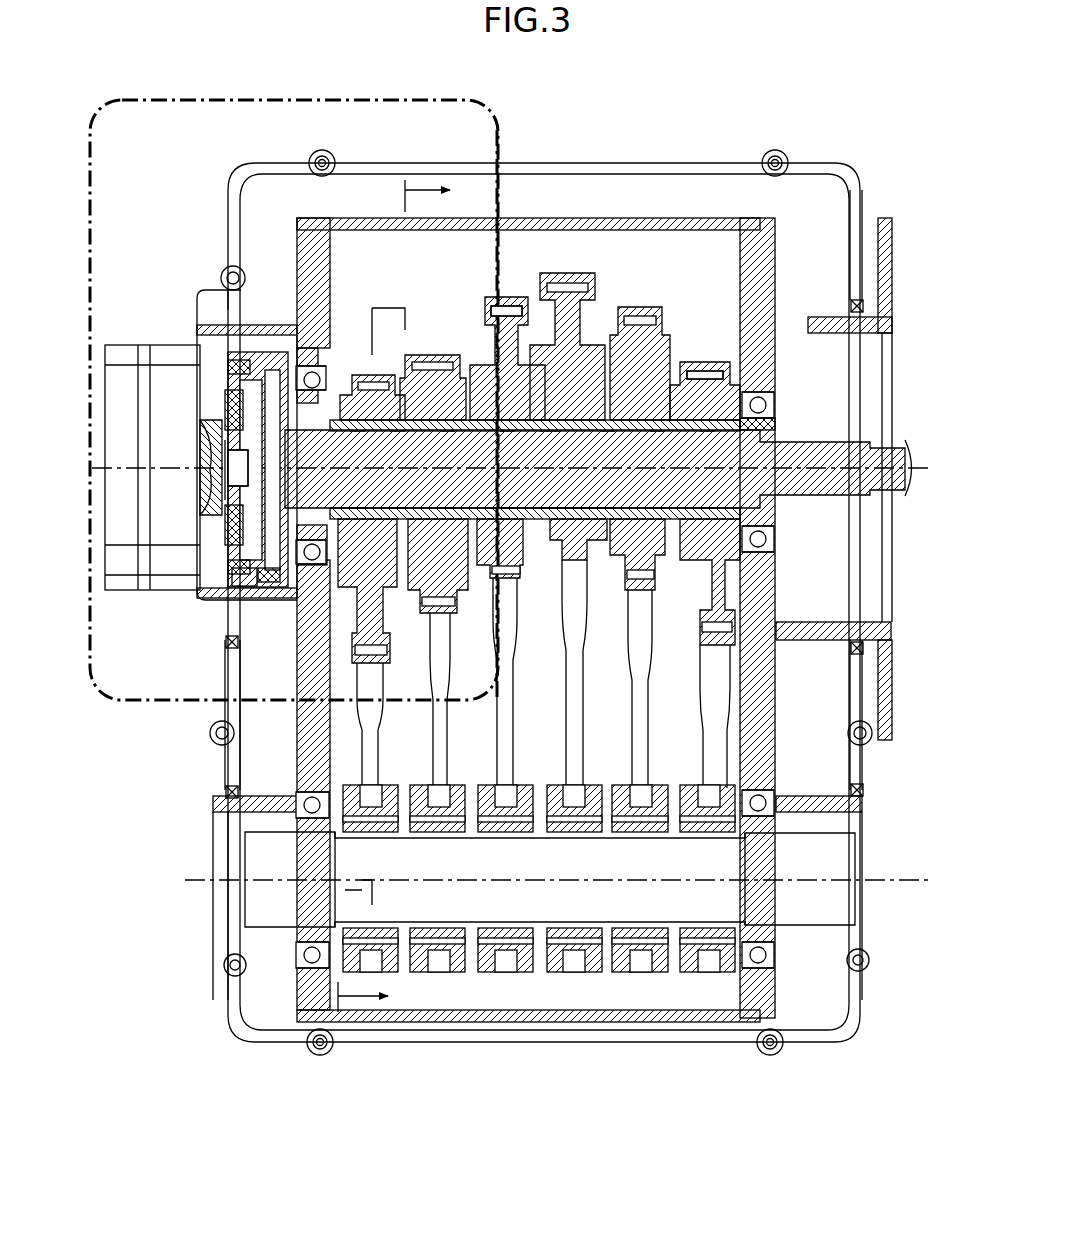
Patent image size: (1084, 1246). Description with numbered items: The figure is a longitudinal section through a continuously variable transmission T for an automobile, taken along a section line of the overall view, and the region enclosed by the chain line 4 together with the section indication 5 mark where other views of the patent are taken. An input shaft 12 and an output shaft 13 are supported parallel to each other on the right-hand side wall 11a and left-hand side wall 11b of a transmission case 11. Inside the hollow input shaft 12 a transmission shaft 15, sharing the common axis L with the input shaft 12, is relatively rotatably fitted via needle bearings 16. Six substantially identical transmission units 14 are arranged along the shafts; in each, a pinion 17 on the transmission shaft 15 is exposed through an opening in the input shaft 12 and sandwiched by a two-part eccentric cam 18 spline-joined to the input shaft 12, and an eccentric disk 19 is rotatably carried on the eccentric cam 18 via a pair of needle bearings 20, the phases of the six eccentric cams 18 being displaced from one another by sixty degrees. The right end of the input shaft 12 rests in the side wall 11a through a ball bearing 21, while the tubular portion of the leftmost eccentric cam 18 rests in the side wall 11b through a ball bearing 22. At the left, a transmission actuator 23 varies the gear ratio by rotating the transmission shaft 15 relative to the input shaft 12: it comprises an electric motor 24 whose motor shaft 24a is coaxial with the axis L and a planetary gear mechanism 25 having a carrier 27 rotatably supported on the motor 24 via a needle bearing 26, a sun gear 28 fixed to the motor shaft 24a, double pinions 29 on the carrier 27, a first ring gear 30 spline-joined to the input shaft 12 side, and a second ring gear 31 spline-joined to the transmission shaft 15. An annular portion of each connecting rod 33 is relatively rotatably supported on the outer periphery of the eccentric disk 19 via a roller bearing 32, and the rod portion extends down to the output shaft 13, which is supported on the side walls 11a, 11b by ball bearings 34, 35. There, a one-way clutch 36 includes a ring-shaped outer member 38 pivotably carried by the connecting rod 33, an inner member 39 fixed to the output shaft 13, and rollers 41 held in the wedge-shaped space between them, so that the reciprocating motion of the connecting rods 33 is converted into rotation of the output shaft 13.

The region shown in FIG. 4 is at (503, 118).
The continuously variable transmission T is at (728, 152).
The transmission case 11 is at (540, 565).
The right-hand side wall 11a is at (758, 222).
The left-hand side wall 11b is at (318, 238).
The input shaft 12 is at (852, 496).
The output shaft 13 is at (280, 856).
The transmission unit 14 is at (488, 300).
The transmission shaft 15 is at (776, 420).
The needle bearing 16 is at (392, 468).
The pinion 17 is at (368, 380).
The eccentric cam 18 is at (385, 540).
The eccentric disk 19 is at (440, 565).
The needle bearing 20 is at (432, 358).
The ball bearing 21 is at (770, 385).
The ball bearing 22 is at (310, 372).
The transmission actuator 23 is at (172, 340).
The electric motor 24 is at (120, 595).
The motor shaft 24a is at (218, 445).
The planetary gear mechanism 25 is at (220, 585).
The needle bearing 26 is at (228, 525).
The carrier 27 is at (228, 405).
The sun gear 28 is at (232, 495).
The double pinion 29 is at (235, 382).
The first ring gear 30 is at (232, 580).
The second ring gear 31 is at (265, 582).
The roller bearing 32 is at (512, 305).
The connecting rod 33 is at (442, 670).
The ball bearing 34 is at (762, 960).
The ball bearing 35 is at (308, 958).
The one-way clutch 36 is at (372, 960).
The outer member 38 is at (432, 815).
The inner member 39 is at (510, 828).
The roller 41 is at (500, 960).
The axis L is at (125, 465).
The section line V-V 5 is at (407, 595).